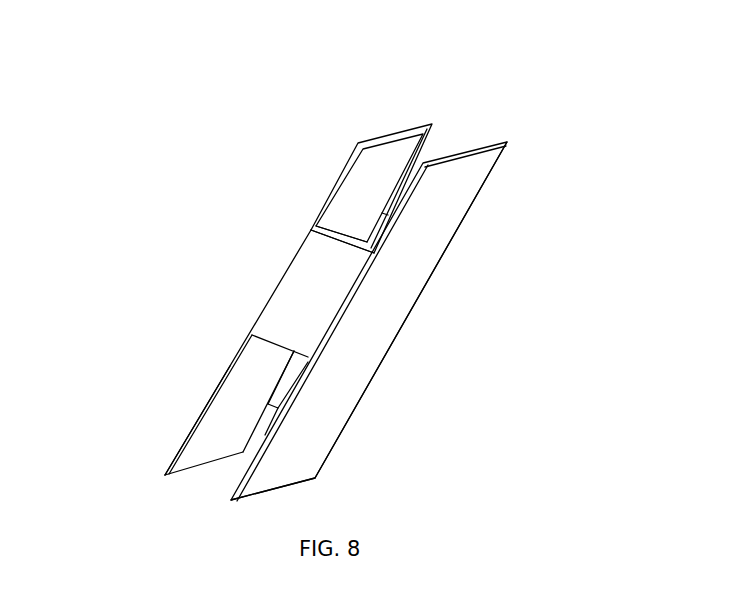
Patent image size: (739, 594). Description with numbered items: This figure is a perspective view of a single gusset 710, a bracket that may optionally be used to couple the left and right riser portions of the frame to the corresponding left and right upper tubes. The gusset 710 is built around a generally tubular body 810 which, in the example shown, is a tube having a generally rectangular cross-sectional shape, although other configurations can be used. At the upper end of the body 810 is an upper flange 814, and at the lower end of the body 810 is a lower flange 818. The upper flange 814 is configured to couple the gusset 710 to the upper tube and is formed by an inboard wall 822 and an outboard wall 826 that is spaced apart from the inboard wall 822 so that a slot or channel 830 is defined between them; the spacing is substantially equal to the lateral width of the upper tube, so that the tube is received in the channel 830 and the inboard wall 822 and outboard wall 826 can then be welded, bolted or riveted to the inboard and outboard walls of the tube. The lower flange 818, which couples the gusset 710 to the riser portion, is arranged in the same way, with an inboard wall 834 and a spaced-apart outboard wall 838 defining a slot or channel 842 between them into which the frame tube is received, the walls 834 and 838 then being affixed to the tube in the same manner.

The gusset 710 is at (383, 337).
The body 810 is at (288, 292).
The upper flange 814 is at (336, 180).
The lower flange 818 is at (193, 417).
The inboard wall 822 is at (362, 170).
The outboard wall 826 is at (448, 203).
The channel 830 is at (337, 242).
The inboard wall 834 is at (180, 445).
The outboard wall 838 is at (298, 462).
The channel 842 is at (280, 343).